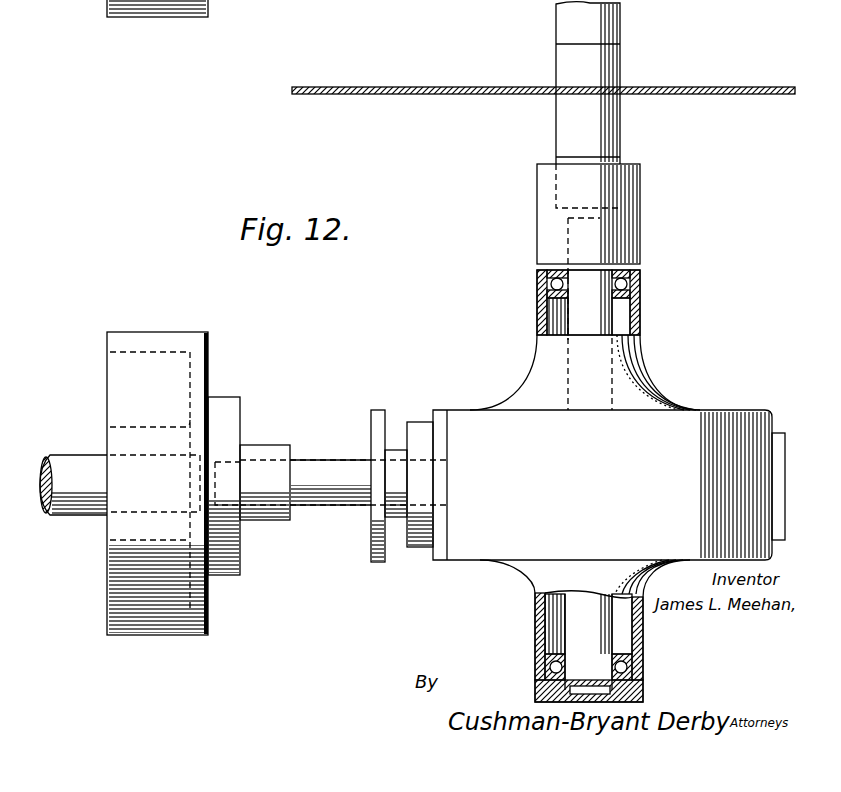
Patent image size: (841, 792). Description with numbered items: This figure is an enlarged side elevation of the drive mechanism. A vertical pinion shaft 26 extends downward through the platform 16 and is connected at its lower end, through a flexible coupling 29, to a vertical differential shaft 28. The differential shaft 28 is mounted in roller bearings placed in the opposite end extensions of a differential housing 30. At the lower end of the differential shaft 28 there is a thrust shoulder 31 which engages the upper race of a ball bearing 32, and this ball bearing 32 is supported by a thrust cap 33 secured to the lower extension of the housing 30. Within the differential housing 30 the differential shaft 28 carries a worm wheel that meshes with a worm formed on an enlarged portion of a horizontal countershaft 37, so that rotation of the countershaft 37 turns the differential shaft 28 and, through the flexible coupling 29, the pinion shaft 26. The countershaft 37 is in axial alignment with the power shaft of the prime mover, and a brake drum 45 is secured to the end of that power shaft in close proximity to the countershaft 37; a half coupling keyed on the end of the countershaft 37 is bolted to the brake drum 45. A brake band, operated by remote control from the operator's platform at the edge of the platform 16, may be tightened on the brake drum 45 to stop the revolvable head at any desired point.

The platform 16 is at (712, 86).
The pinion shaft 26 is at (606, 22).
The differential shaft 28 is at (600, 305).
The flexible coupling 29 is at (620, 207).
The differential housing 30 is at (697, 418).
The thrust shoulder 31 is at (568, 657).
The ball bearing 32 is at (548, 676).
The thrust cap 33 is at (545, 690).
The countershaft 37 is at (335, 500).
The brake drum 45 is at (193, 352).